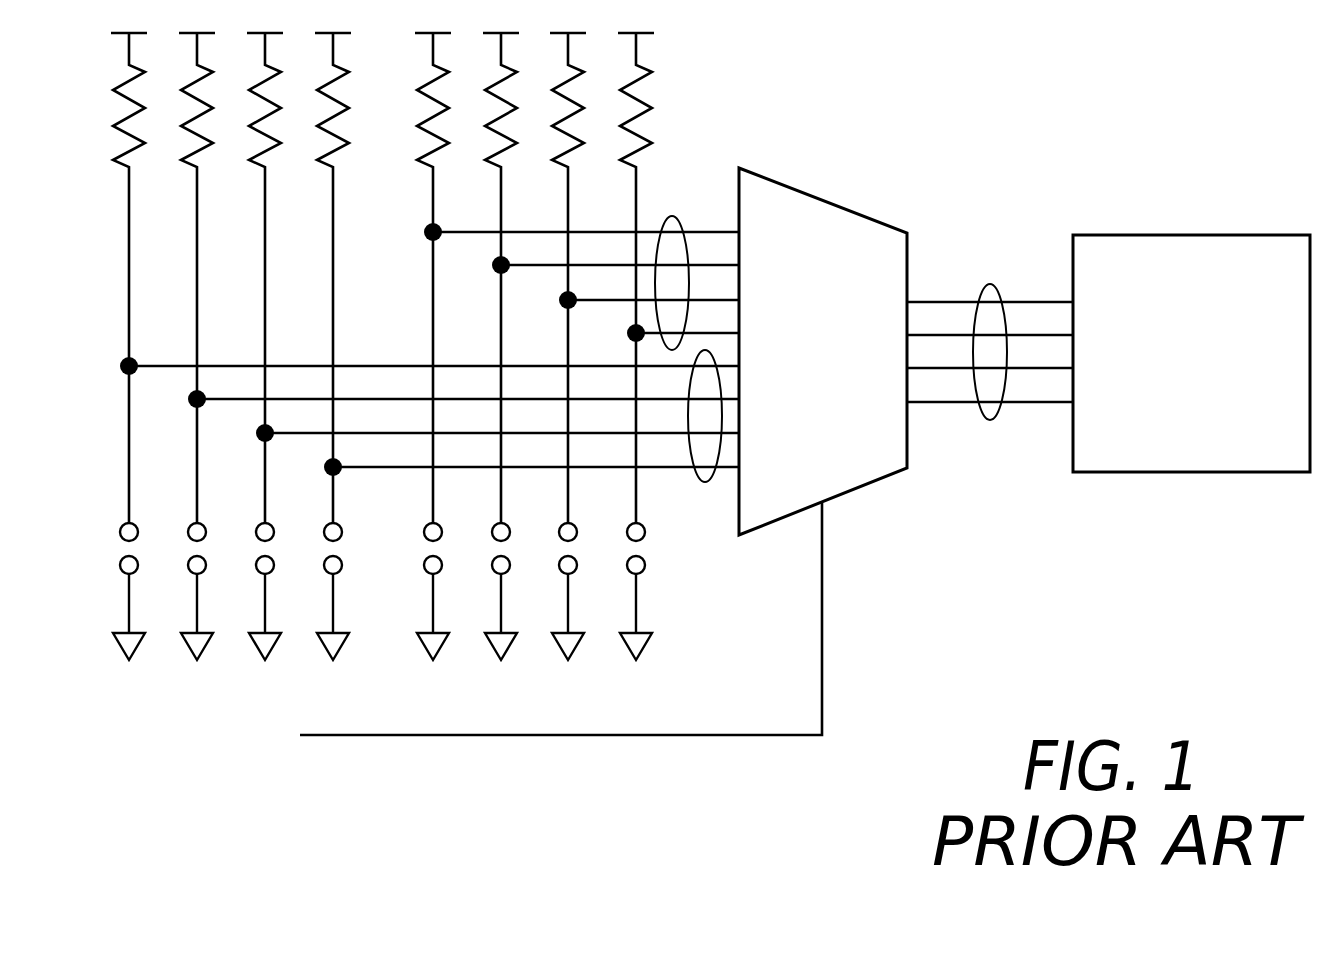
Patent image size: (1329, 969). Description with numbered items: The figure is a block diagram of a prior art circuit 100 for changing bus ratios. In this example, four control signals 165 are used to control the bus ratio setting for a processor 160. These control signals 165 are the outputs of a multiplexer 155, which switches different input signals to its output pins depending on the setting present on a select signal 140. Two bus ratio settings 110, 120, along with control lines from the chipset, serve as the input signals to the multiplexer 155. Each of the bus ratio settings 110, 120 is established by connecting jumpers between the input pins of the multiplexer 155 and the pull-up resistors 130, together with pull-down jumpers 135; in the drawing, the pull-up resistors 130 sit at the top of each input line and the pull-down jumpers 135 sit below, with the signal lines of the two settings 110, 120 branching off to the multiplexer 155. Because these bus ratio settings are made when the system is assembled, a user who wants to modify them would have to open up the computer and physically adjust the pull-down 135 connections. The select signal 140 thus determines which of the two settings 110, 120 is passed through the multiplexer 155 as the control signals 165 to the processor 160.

The prior art circuit 100 is at (992, 522).
The first bus ratio setting 110 is at (683, 217).
The second bus ratio setting 120 is at (705, 482).
The pull-up resistors 130 is at (658, 118).
The pull-down jumpers 135 is at (647, 552).
The select signal 140 is at (253, 750).
The multiplexer 155 is at (823, 351).
The processor 160 is at (1191, 353).
The control signals 165 is at (983, 285).